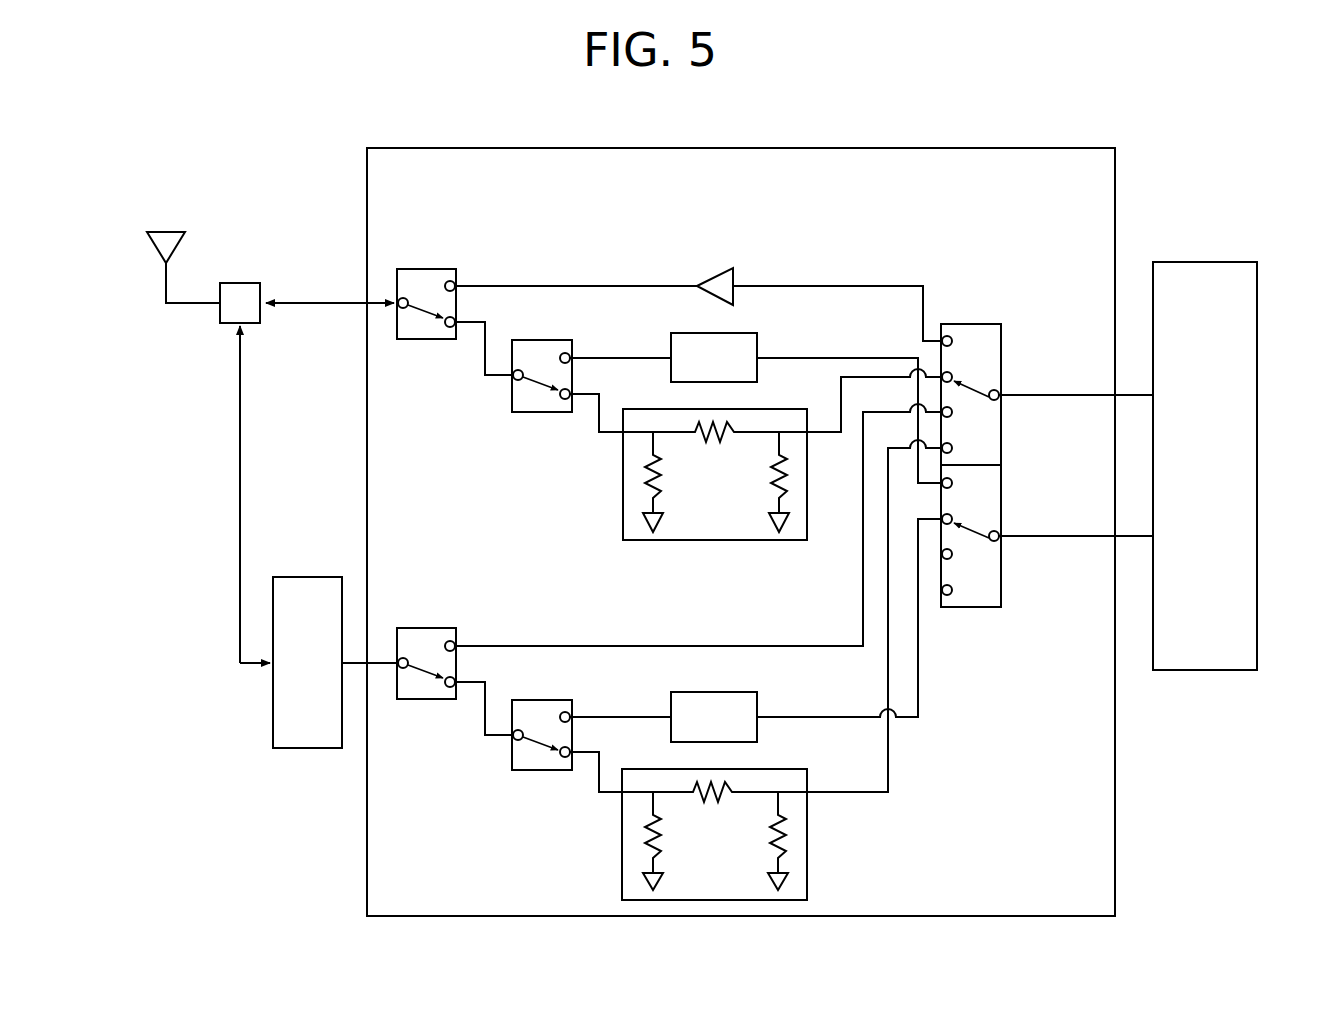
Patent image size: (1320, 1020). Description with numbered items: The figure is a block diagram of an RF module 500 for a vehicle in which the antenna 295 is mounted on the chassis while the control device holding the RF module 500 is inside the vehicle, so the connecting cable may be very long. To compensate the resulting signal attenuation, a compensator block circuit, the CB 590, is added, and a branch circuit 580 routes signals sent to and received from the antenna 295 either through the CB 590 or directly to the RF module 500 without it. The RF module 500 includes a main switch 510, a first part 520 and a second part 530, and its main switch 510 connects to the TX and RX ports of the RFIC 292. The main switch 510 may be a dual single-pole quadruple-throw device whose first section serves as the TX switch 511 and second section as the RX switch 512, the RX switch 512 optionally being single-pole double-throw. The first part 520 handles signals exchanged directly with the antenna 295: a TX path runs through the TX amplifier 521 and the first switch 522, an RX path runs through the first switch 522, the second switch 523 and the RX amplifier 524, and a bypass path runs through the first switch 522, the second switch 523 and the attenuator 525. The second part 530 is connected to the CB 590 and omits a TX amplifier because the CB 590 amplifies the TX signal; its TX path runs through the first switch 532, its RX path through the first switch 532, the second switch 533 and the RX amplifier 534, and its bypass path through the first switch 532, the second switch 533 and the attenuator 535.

The antenna 295 is at (165, 232).
The branch circuit 580 is at (240, 283).
The compensator block circuit (CB) 590 is at (305, 577).
The RFIC 292 is at (1203, 262).
The RF module 500 is at (890, 148).
The main switch 510 is at (1005, 316).
The TX switch 511 is at (1001, 344).
The RX switch 512 is at (1001, 580).
The first part 520 is at (533, 228).
The TX amplifier 521 is at (712, 268).
The first switch 522 is at (426, 269).
The second switch 523 is at (512, 393).
The RX amplifier 524 is at (757, 345).
The attenuator 525 is at (623, 474).
The second part 530 is at (525, 582).
The first switch 532 is at (426, 628).
The second switch 533 is at (512, 753).
The RX amplifier 534 is at (757, 704).
The attenuator 535 is at (622, 834).